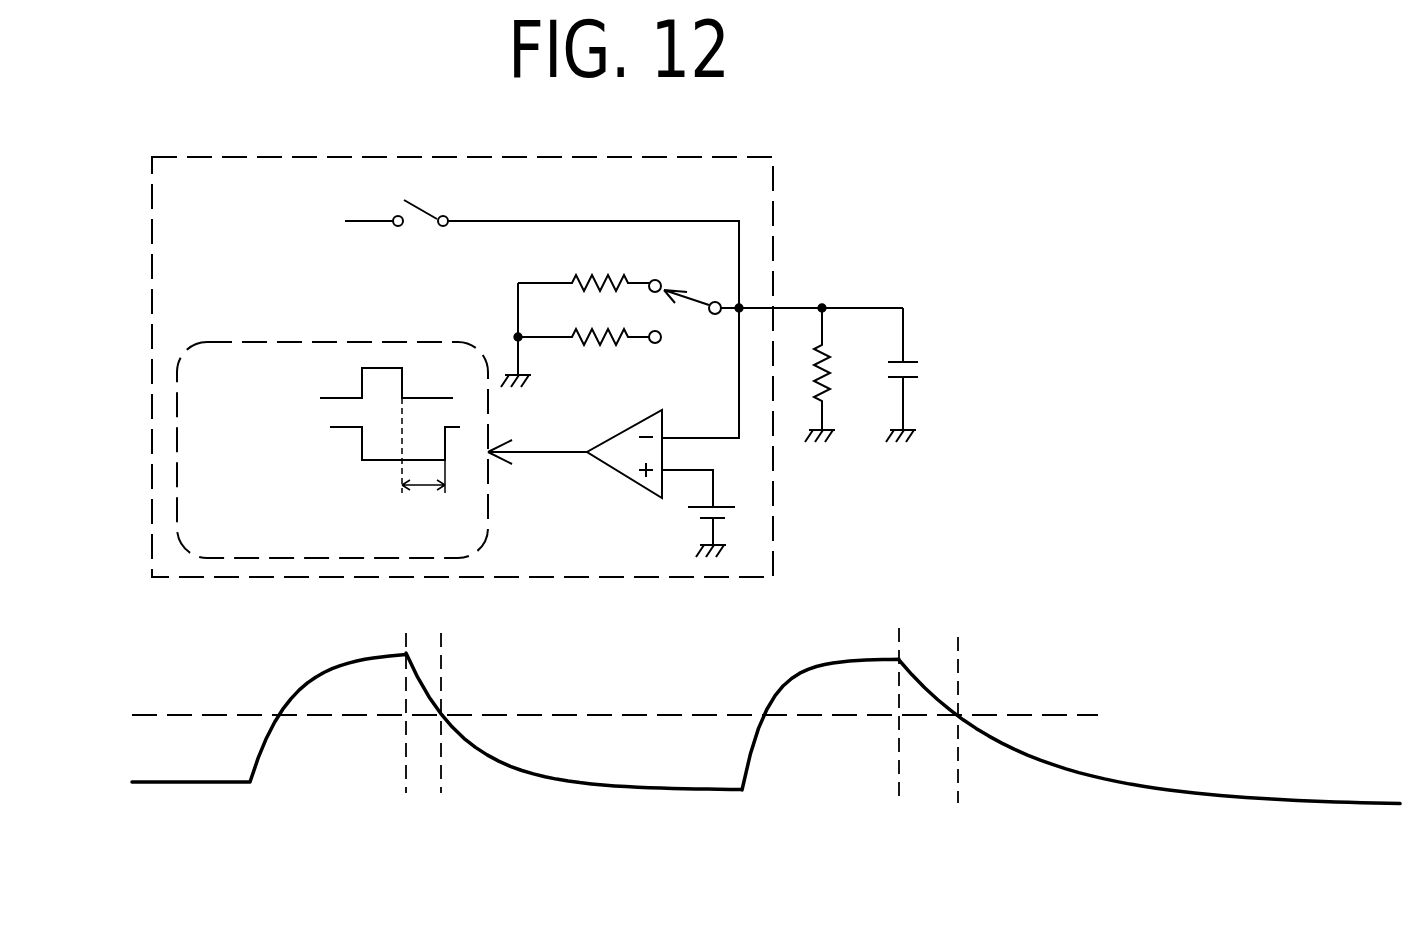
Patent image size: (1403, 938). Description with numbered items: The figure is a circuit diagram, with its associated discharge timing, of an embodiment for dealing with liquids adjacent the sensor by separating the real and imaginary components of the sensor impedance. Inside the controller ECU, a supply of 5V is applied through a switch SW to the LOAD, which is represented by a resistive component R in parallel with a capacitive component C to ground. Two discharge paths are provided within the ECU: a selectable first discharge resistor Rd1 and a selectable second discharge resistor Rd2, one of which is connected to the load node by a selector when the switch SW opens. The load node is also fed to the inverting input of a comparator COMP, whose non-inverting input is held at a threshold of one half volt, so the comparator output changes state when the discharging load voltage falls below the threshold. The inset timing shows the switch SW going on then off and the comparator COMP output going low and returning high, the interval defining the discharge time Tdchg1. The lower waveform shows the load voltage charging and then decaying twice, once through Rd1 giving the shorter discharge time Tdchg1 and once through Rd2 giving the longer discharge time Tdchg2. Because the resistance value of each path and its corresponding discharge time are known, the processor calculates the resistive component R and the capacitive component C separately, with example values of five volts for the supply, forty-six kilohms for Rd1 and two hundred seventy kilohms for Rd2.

The electronic control unit ECU is at (527, 367).
The supply voltage E 5V is at (350, 214).
The switch SW is at (420, 234).
The first discharge resistor Rd1 is at (589, 263).
The second discharge resistor Rd2 is at (589, 358).
The comparator COMP is at (575, 454).
The load LOAD is at (875, 347).
The resistive component R is at (833, 375).
The capacitive component C is at (916, 375).
The first discharge time Tdchg1 is at (332, 450).
The second discharge time Tdchg2 is at (766, 702).